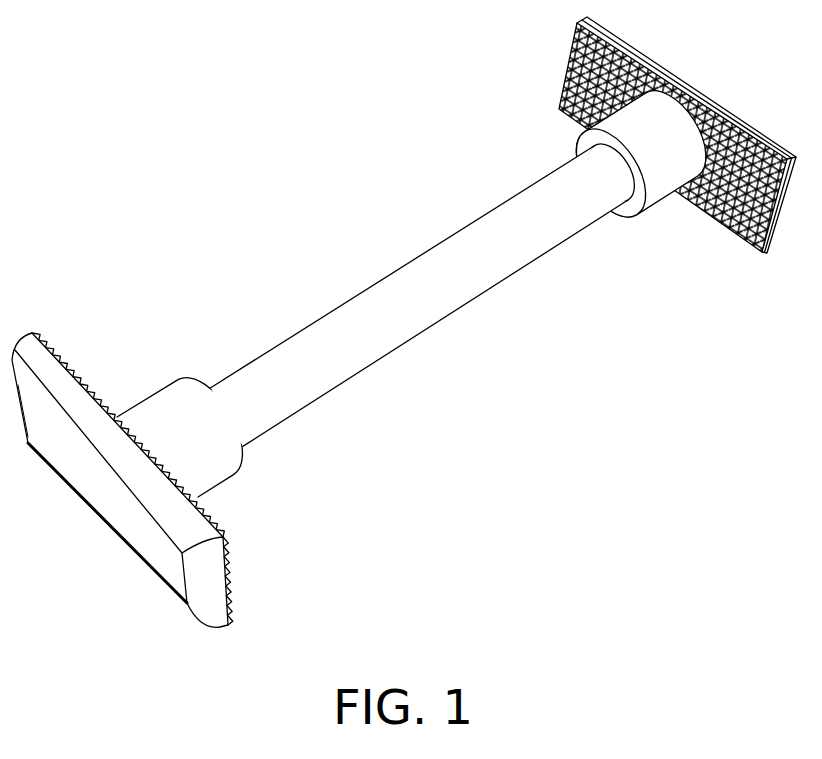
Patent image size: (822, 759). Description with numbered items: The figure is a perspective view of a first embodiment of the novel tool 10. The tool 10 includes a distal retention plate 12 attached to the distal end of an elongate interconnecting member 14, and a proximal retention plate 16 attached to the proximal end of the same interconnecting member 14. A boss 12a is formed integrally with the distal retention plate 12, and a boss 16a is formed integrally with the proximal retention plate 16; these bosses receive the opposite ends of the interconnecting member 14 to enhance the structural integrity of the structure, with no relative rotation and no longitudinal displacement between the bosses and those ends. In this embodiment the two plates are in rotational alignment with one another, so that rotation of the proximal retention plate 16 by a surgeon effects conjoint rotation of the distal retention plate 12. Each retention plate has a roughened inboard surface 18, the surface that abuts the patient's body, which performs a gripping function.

The tool 10 is at (308, 133).
The distal retention plate 12 is at (717, 102).
The boss 12a is at (660, 190).
The elongate interconnecting member 14 is at (443, 290).
The proximal retention plate 16 is at (100, 497).
The boss 16a is at (173, 395).
The roughened inboard surface 18 is at (562, 95).